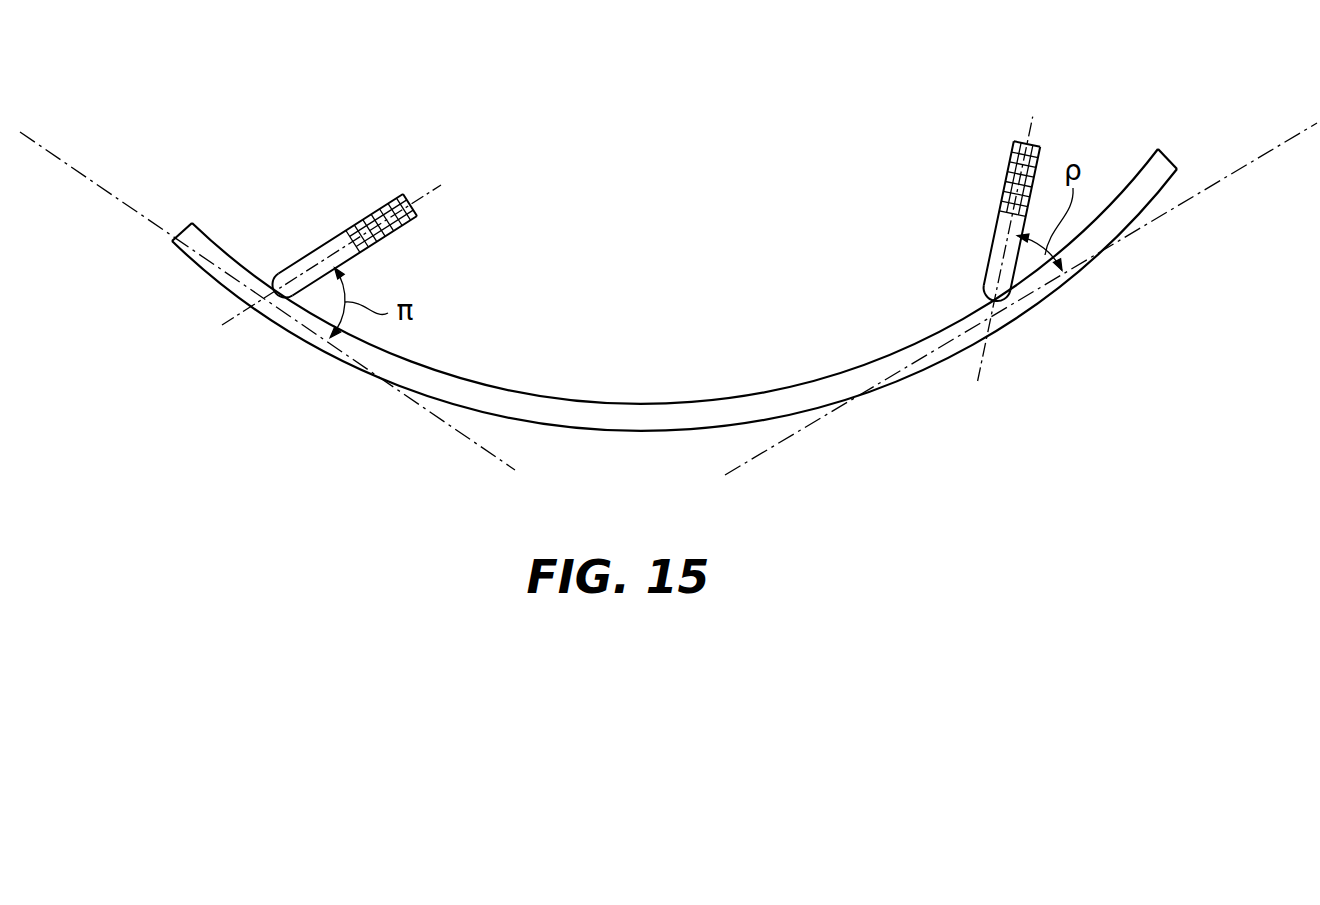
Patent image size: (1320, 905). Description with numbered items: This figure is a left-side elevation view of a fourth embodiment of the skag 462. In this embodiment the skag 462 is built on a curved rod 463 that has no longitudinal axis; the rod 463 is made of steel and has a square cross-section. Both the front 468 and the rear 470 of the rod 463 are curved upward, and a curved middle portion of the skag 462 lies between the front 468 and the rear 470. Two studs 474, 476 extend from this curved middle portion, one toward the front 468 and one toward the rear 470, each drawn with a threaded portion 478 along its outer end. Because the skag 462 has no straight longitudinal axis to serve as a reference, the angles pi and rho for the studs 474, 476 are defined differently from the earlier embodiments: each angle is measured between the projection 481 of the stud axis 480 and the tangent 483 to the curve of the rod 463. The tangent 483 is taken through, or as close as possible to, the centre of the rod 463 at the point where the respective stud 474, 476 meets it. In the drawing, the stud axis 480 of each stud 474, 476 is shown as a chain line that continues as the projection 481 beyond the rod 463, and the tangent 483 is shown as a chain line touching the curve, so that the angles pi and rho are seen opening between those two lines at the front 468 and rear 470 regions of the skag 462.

The skag 462 is at (682, 276).
The curved rod 463 is at (718, 408).
The front 468 is at (228, 246).
The rear 470 is at (1117, 180).
The stud 474 is at (365, 190).
The stud 476 is at (1037, 163).
The threaded portion 478 is at (399, 250).
The stud axis 480 is at (445, 190).
The projection of the stud axis 481 is at (247, 327).
The tangent 483 is at (378, 393).